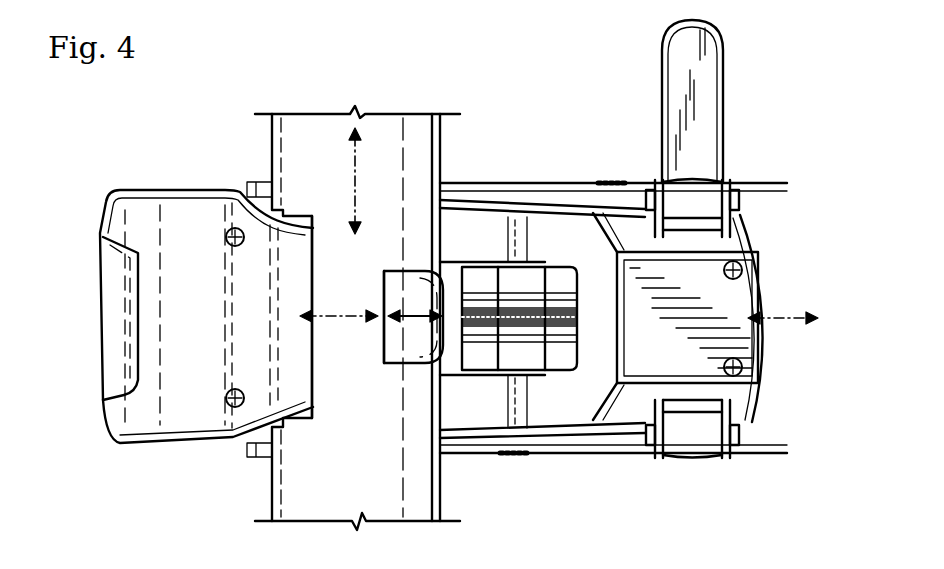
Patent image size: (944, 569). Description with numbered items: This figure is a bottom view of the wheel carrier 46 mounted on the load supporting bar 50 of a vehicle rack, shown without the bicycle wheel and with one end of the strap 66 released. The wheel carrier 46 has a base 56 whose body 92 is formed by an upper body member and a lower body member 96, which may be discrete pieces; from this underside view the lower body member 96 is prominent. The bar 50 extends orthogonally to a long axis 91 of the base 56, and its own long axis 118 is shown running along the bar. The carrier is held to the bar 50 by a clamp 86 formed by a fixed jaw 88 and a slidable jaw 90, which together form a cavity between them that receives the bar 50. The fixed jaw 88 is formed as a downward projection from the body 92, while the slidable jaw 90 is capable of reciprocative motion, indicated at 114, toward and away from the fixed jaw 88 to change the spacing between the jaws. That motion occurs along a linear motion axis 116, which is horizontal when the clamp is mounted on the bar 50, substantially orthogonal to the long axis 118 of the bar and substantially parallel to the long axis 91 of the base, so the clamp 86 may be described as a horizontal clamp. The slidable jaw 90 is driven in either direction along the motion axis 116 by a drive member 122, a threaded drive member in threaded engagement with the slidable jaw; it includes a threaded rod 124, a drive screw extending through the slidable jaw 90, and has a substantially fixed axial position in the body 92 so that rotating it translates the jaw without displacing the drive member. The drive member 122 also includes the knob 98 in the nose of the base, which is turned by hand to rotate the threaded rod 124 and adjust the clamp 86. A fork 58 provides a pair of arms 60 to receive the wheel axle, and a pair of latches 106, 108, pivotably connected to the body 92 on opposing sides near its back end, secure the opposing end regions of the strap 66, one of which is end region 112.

The wheel carrier 46 is at (536, 152).
The load supporting bar 50 is at (272, 143).
The base 56 is at (178, 297).
The fork 58 is at (492, 182).
The arms 60 is at (572, 183).
The strap 66 is at (701, 101).
The clamp 86 is at (390, 372).
The fixed jaw 88 is at (306, 292).
The slidable jaw 90 is at (392, 272).
The long axis of base 91 is at (786, 328).
The body 92 is at (150, 186).
The lower body member 96 is at (192, 210).
The knob 98 is at (100, 370).
The latch 106 is at (760, 438).
The latch 108 is at (758, 203).
The end region of strap 112 is at (724, 112).
The reciprocative motion 114 is at (413, 320).
The linear motion axis 116 is at (330, 326).
The long axis of bar 118 is at (350, 196).
The drive member 122 is at (92, 316).
The threaded rod 124 is at (527, 305).